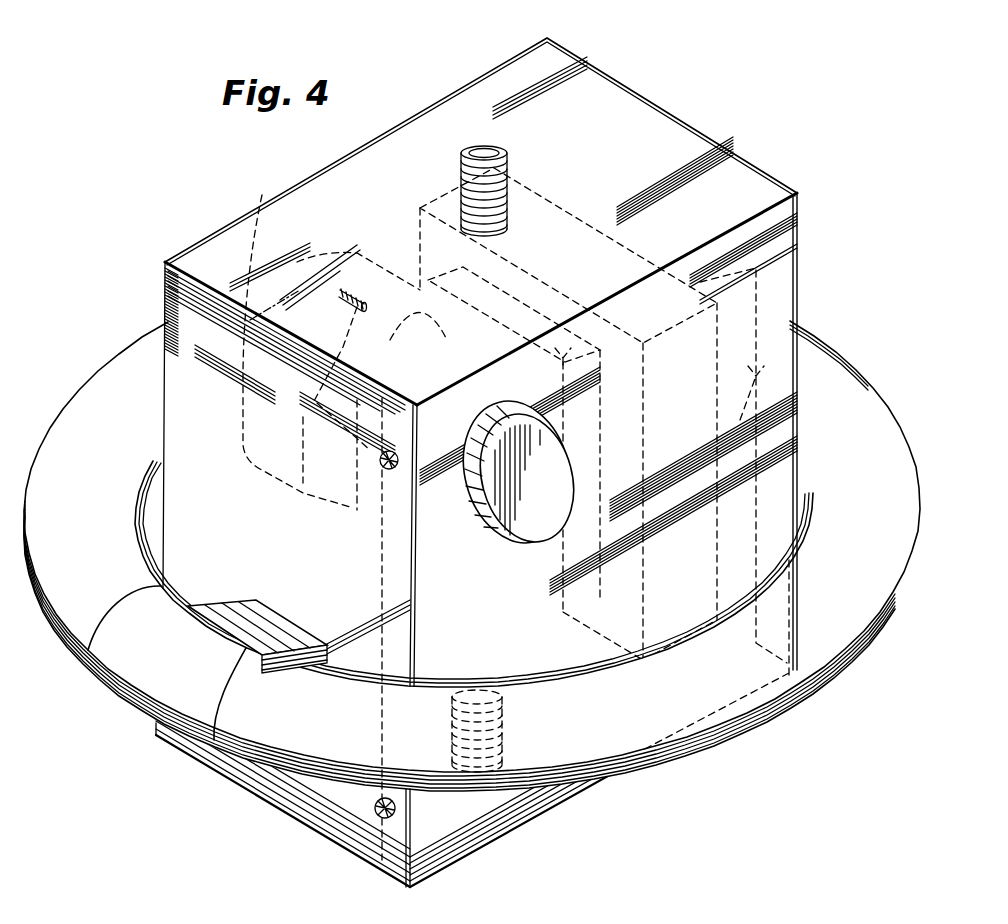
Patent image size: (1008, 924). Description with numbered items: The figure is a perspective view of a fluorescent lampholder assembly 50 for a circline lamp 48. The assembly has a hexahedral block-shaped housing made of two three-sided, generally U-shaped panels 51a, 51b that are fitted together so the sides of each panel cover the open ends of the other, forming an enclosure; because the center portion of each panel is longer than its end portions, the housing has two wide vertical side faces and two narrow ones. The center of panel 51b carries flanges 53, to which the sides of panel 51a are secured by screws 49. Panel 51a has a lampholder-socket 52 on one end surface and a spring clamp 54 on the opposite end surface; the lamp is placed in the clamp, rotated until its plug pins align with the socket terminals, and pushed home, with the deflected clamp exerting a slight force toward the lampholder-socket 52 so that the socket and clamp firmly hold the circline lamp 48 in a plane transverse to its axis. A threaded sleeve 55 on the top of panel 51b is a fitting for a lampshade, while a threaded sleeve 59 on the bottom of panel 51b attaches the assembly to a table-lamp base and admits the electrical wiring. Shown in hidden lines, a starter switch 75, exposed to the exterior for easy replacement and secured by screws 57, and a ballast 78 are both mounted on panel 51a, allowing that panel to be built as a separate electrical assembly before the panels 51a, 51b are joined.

The circline lamp 48 is at (882, 344).
The screws 49 is at (380, 478).
The lampholder assembly 50 is at (700, 62).
The panel 51a is at (163, 296).
The panel 51b is at (518, 827).
The lampholder-socket 52 is at (263, 600).
The flanges 53 is at (385, 570).
The spring clamp 54 is at (766, 308).
The threaded sleeve 55 is at (508, 154).
The screws 57 is at (358, 268).
The threaded sleeve 59 is at (535, 792).
The starter switch 75 is at (268, 197).
The ballast 78 is at (748, 170).